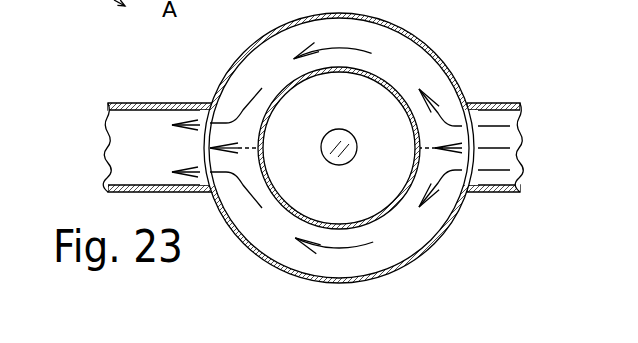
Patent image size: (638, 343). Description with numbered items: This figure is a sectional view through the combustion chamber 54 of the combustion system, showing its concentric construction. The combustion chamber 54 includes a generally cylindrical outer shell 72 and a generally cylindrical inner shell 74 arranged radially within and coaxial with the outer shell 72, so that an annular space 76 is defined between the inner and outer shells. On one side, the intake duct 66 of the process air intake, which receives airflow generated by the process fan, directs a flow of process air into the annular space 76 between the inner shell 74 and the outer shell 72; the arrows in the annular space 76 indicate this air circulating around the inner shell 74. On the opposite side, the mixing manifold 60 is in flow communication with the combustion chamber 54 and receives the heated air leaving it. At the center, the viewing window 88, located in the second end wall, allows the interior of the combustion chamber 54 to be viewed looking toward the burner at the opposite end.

The combustion chamber 54 is at (311, 141).
The mixing manifold 60 is at (133, 103).
The intake duct 66 is at (488, 103).
The outer shell 72 is at (233, 62).
The inner shell 74 is at (303, 78).
The annular space 76 is at (410, 65).
The viewing window 88 is at (341, 165).